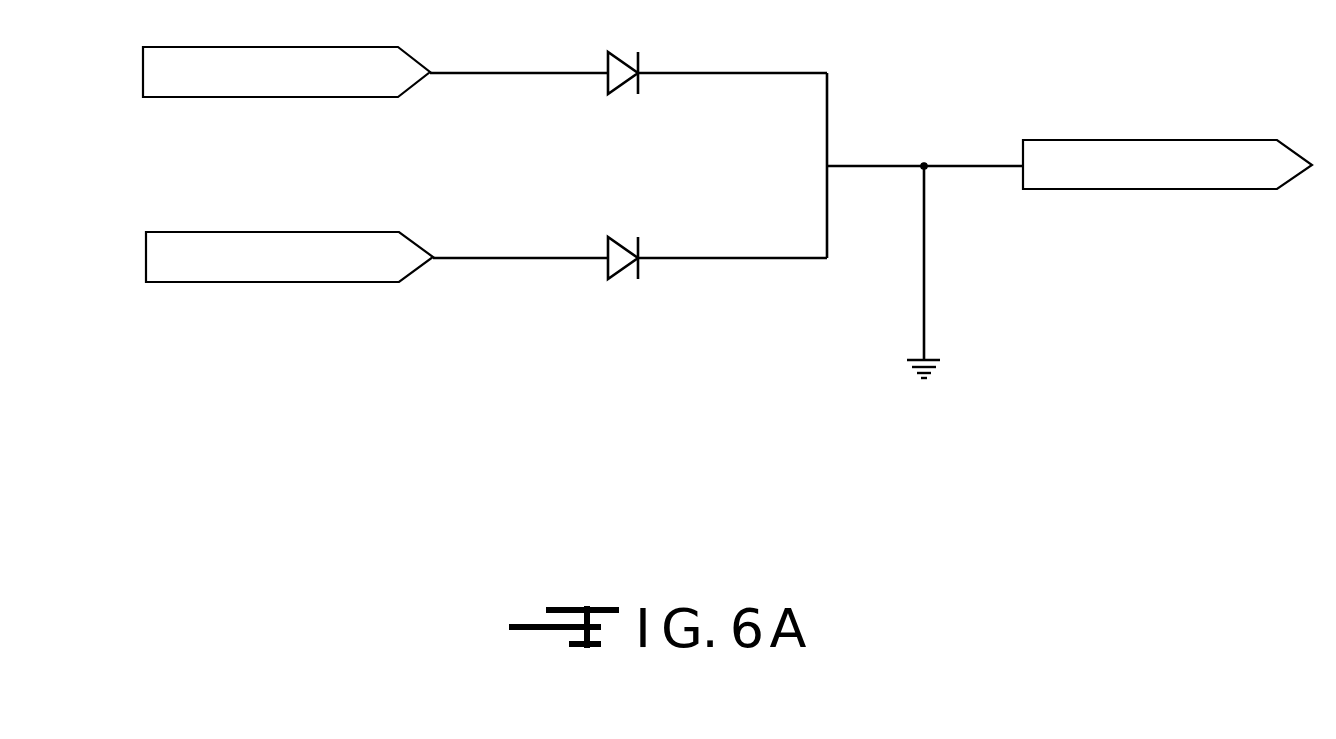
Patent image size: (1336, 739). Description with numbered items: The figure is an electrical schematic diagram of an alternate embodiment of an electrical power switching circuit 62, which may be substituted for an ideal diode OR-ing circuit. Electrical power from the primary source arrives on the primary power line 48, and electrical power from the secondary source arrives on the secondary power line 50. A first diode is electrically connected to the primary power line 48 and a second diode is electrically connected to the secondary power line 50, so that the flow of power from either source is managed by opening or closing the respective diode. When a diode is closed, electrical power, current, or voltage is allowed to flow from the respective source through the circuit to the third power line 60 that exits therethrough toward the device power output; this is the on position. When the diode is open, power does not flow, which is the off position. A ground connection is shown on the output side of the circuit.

The primary power line 48 is at (498, 73).
The secondary power line 50 is at (495, 258).
The third power line 60 is at (965, 166).
The electrical power switching circuit 62 is at (727, 210).